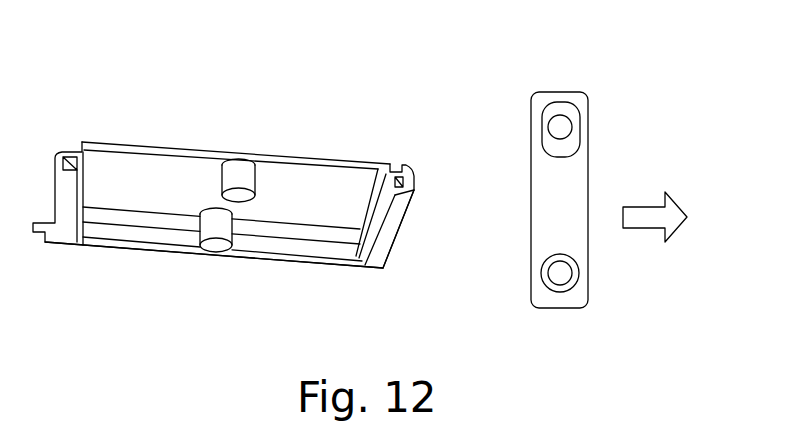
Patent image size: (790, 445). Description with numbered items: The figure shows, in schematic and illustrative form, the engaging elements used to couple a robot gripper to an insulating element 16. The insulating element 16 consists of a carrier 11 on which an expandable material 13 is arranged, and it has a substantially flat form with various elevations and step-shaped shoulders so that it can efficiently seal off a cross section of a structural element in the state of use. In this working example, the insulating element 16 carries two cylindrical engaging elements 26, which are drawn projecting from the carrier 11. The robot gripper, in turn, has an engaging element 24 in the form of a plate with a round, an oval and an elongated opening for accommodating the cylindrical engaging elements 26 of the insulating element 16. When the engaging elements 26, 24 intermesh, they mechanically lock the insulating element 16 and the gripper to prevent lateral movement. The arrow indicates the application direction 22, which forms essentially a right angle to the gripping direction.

The carrier 11 is at (390, 217).
The expandable material 13 is at (403, 168).
The insulating element 16 is at (247, 163).
The application direction 22 is at (640, 212).
The engaging element 24 is at (572, 233).
The cylindrical engaging elements 26 is at (237, 178).